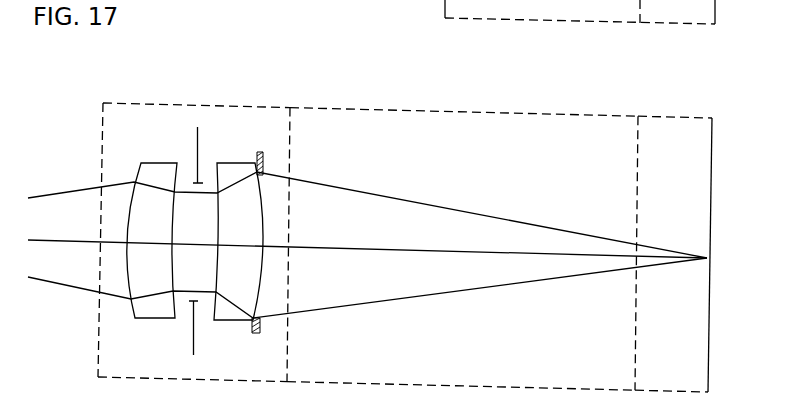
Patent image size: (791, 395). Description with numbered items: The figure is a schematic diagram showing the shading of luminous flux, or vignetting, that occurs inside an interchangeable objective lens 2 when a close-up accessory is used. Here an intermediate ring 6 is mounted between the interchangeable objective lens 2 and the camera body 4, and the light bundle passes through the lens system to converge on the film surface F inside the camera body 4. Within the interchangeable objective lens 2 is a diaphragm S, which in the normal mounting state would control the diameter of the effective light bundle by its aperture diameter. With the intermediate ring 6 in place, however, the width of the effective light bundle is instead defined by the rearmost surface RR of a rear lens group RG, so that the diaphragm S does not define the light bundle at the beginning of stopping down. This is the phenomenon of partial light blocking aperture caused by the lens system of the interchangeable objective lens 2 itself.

The interchangeable objective lens 2 is at (255, 105).
The intermediate ring 6 is at (432, 110).
The camera body 4 is at (670, 118).
The film surface F is at (712, 190).
The diaphragm S is at (196, 140).
The rearmost surface RR is at (263, 192).
The rear lens group RG is at (229, 323).